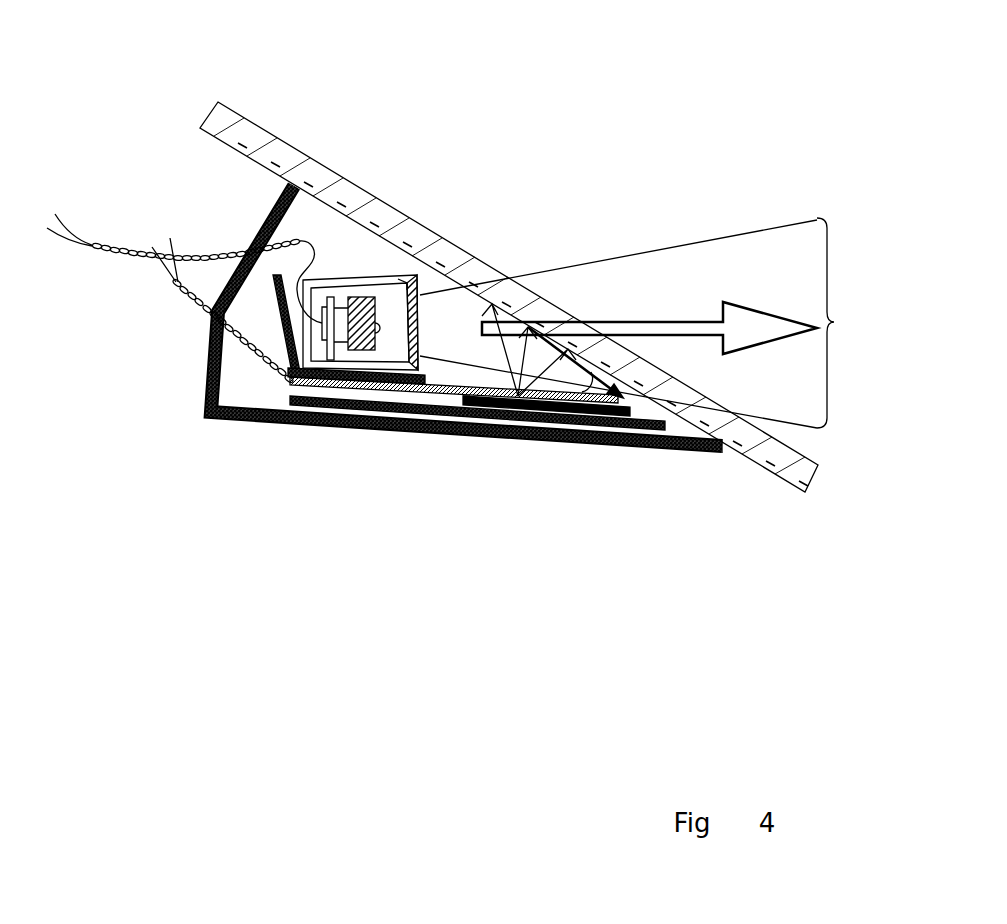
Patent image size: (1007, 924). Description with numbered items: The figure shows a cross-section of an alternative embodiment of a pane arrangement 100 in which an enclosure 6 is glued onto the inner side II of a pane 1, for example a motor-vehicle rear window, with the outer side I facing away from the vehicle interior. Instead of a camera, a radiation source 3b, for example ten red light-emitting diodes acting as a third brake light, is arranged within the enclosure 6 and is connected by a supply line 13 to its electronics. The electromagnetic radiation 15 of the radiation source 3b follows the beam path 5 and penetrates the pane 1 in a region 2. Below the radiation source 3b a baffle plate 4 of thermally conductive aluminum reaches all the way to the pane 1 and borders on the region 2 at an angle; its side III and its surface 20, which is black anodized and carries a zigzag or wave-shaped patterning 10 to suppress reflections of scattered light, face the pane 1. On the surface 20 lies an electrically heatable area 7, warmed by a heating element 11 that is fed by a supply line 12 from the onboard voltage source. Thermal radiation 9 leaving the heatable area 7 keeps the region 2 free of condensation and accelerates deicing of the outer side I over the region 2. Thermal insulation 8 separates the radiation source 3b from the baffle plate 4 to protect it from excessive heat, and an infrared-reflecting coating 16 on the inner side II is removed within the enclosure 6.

The pane 1 is at (222, 127).
The region 2 is at (537, 310).
The radiation source 3b is at (371, 268).
The baffle plate 4 is at (572, 445).
The beam path 5 is at (668, 323).
The enclosure 6 is at (260, 420).
The heatable area 7 is at (458, 395).
The thermal insulation 8 is at (335, 377).
The thermal radiation 9 is at (457, 407).
The patterning 10 is at (470, 395).
The heating element 11 is at (515, 400).
The supply line 12 is at (180, 303).
The supply line 13 is at (118, 248).
The electromagnetic radiation 15 is at (682, 335).
The coating 16 is at (290, 192).
The surface of the baffle plate 20 is at (455, 373).
The pane arrangement 100 is at (587, 107).
The outer side of the pane I is at (235, 91).
The inner side of the pane II is at (785, 492).
The side of the baffle plate III is at (540, 374).